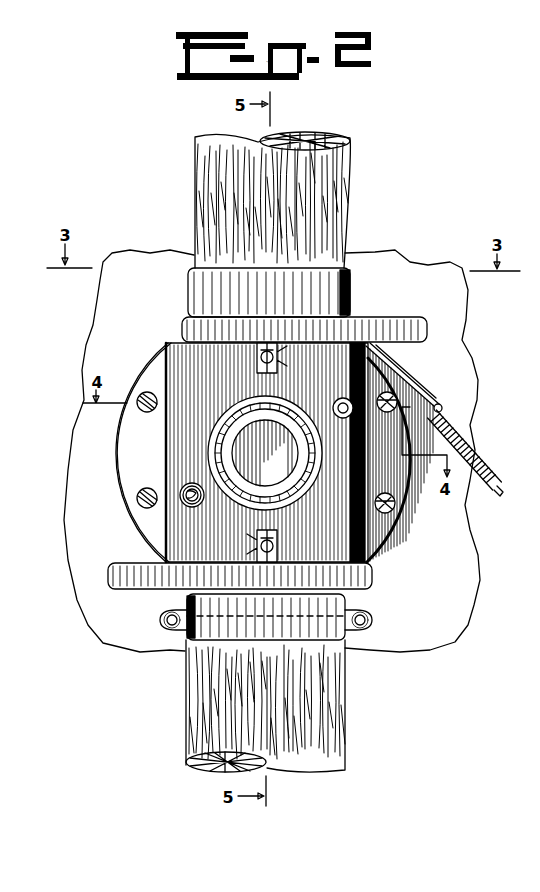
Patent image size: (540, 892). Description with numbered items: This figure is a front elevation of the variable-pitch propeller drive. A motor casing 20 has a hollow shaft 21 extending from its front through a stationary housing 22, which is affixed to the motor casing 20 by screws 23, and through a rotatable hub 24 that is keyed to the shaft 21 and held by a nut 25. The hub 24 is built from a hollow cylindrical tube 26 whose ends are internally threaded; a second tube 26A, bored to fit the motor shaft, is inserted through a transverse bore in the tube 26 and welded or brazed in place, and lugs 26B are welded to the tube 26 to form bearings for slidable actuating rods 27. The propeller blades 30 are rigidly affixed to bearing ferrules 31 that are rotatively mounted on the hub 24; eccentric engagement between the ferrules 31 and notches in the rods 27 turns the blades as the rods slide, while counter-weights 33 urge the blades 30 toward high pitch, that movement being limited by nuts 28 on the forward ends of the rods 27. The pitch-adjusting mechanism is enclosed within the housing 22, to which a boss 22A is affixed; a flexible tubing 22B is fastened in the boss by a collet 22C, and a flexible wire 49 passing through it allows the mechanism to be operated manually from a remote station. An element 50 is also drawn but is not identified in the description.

The motor casing 20 is at (147, 250).
The hollow shaft 21 is at (270, 495).
The stationary housing 22 is at (128, 441).
The boss 22A is at (404, 394).
The flexible tubing 22B is at (462, 438).
The collet 22C is at (443, 406).
The screws 23 is at (143, 394).
The rotatable hub 24 is at (154, 460).
The nut 25 is at (268, 492).
The hollow cylindrical tube 26 is at (178, 424).
The tube 26A is at (260, 398).
The lugs 26B is at (182, 500).
The actuating rods 27 is at (186, 504).
The nuts 28 is at (190, 507).
The propeller blades 30 is at (348, 159).
The bearing ferrules 31 is at (350, 284).
The counter-weights 33 is at (397, 322).
The flexible wire 49 is at (501, 496).
The mounting lug 50 is at (160, 623).